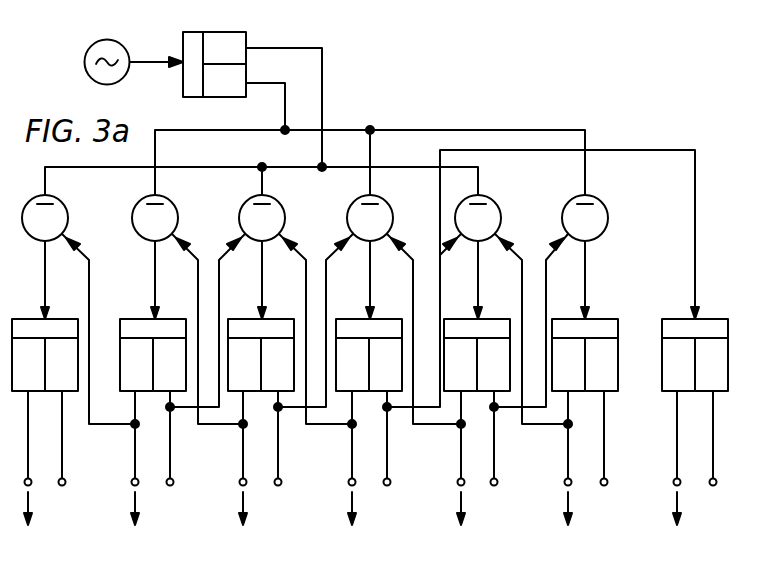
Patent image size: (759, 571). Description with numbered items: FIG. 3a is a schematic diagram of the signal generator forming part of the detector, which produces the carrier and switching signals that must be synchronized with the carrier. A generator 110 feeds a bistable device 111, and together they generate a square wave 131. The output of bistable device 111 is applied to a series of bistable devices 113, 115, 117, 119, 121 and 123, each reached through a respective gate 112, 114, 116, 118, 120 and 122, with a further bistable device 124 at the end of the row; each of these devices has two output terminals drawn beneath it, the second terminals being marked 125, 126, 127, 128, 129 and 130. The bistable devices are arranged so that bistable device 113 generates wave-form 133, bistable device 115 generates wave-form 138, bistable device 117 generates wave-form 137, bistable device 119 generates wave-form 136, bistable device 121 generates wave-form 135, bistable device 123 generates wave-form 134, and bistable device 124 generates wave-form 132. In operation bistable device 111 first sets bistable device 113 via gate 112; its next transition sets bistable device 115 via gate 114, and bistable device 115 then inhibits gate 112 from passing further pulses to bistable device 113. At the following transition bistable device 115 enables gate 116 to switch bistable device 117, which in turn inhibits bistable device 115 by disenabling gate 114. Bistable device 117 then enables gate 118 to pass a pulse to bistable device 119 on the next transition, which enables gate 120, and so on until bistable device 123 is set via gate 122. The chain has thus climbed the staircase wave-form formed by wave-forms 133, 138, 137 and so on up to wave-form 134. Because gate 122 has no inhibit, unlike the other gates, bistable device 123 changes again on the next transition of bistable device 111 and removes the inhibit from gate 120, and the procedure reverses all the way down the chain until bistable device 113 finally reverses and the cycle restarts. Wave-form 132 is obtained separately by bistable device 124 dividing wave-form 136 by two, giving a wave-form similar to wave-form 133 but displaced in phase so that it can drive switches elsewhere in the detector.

The generator 110 is at (122, 41).
The bistable device 111 is at (238, 43).
The gate 112 is at (67, 196).
The bistable device 113 is at (58, 320).
The gate 114 is at (177, 196).
The bistable device 115 is at (166, 320).
The gate 116 is at (284, 196).
The bistable device 117 is at (274, 320).
The gate 118 is at (392, 196).
The bistable device 119 is at (382, 320).
The gate 120 is at (500, 196).
The bistable device 121 is at (490, 320).
The gate 122 is at (607, 196).
The bistable device 123 is at (598, 320).
The bistable device 124 is at (680, 322).
The output terminal 125 is at (65, 485).
The output terminal 126 is at (173, 485).
The output terminal 127 is at (281, 485).
The output terminal 128 is at (390, 485).
The output terminal 129 is at (497, 485).
The output terminal 130 is at (607, 485).
The square wave 131 is at (343, 26).
The wave-form 132 is at (680, 518).
The wave-form 133 is at (26, 518).
The wave-form 134 is at (569, 518).
The wave-form 135 is at (464, 518).
The wave-form 136 is at (354, 518).
The wave-form 137 is at (244, 518).
The wave-form 138 is at (131, 518).